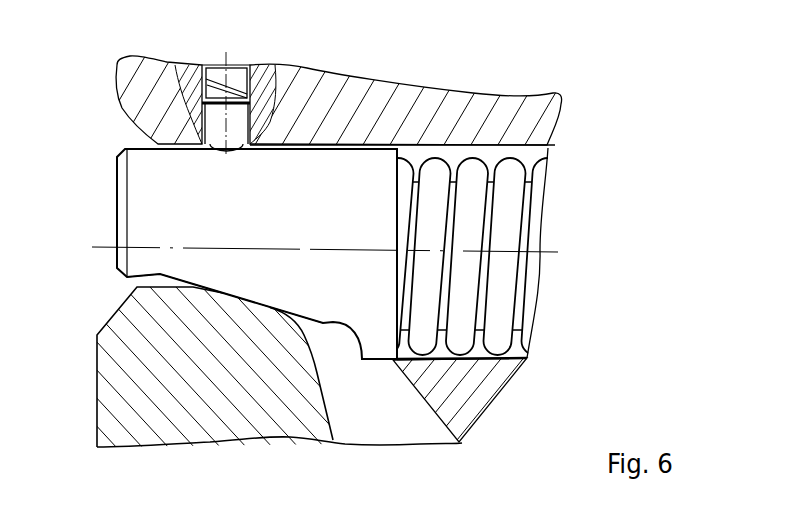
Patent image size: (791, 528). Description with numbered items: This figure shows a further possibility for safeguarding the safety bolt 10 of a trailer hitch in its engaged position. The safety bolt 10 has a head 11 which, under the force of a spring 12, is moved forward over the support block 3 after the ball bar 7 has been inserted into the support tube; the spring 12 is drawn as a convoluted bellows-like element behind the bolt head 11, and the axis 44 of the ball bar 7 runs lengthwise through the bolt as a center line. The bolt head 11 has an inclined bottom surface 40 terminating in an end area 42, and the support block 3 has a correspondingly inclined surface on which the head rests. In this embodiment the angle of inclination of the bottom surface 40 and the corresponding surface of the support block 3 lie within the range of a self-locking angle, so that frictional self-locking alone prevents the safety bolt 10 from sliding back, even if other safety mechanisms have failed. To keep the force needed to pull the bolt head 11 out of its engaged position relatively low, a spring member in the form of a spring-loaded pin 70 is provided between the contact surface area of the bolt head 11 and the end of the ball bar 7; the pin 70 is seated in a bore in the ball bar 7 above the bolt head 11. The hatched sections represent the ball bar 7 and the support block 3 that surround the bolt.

The support block 3 is at (122, 380).
The ball bar 7 is at (158, 85).
The safety bolt 10 is at (484, 210).
The safety bolt head 11 is at (139, 182).
The spring 12 is at (496, 313).
The inclined bottom surface 40 is at (323, 335).
The end area 42 is at (120, 287).
The axis of the ball bar 44 is at (547, 251).
The spring-loaded pin 70 is at (237, 56).